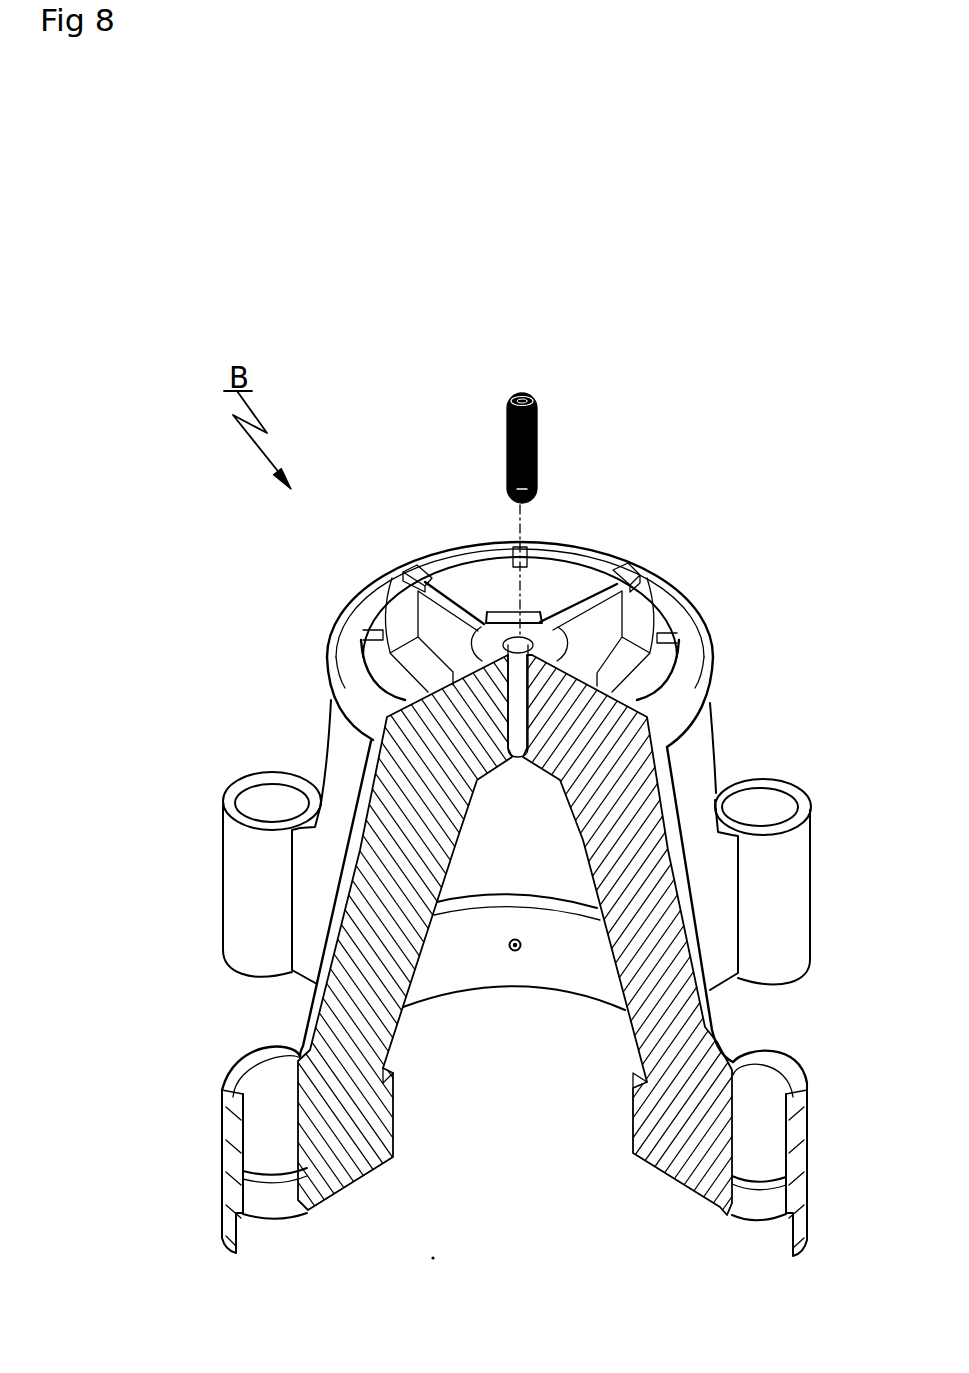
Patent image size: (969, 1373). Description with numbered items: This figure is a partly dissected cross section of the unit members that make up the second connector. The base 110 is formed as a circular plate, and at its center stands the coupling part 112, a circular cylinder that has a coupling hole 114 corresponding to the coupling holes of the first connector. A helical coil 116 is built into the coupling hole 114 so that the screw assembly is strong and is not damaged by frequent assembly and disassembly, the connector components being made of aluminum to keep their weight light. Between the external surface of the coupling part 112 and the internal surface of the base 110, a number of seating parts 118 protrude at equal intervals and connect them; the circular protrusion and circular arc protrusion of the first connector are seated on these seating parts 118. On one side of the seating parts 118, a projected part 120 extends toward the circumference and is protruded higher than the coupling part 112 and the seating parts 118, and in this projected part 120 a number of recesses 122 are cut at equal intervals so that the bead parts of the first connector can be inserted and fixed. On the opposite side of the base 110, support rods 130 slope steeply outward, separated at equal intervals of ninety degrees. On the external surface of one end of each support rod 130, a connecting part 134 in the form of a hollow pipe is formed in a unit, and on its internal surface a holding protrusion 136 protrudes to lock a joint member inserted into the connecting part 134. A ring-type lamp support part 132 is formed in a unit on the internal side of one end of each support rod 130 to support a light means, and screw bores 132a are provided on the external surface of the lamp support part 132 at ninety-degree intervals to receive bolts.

The base 110 is at (333, 673).
The coupling part 112 is at (541, 610).
The coupling hole 114 is at (515, 760).
The helical coil 116 is at (537, 447).
The seating parts 118 is at (683, 700).
The projected part 120 is at (386, 600).
The recesses 122 is at (667, 633).
The support rod 130 is at (705, 1003).
The lamp support part 132 is at (519, 970).
The screw bores 132a is at (508, 945).
The connecting part 134 is at (221, 1186).
The holding protrusion 136 is at (280, 1172).